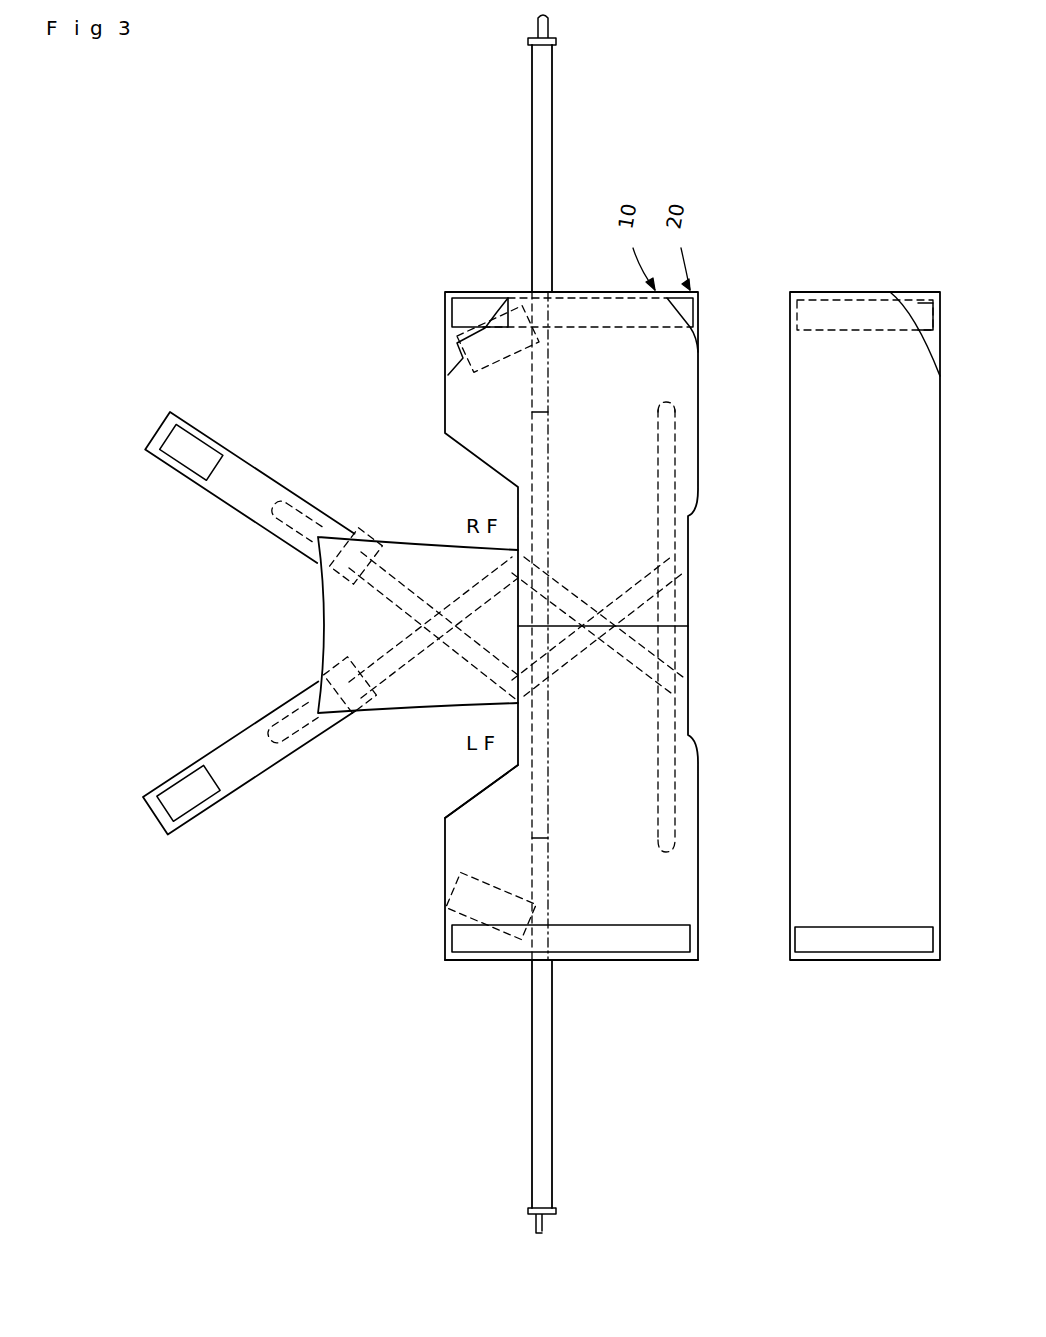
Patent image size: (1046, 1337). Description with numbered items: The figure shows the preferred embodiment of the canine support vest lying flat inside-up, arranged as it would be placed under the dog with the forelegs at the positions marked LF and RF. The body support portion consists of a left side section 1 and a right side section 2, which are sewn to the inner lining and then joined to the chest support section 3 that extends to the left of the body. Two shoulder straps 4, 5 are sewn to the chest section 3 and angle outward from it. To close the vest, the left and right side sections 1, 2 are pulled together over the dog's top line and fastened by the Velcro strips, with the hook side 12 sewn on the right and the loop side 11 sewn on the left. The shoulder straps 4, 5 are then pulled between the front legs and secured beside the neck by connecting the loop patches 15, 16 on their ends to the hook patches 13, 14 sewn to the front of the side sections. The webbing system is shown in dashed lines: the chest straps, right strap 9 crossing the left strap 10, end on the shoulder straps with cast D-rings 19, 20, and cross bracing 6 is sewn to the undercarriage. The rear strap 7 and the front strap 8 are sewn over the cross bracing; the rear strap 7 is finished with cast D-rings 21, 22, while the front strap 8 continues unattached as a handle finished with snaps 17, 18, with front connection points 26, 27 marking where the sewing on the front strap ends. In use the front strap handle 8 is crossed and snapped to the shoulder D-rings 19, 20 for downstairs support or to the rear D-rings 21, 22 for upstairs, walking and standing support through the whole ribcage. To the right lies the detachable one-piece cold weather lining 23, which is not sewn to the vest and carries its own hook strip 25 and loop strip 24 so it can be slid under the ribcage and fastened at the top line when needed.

The left side section 1 is at (571, 862).
The right side section 2 is at (571, 626).
The chest support section 3 is at (418, 625).
The shoulder strap 4 is at (249, 753).
The shoulder strap 5 is at (249, 491).
The cross bracing 6 is at (600, 625).
The rear strap 7 is at (672, 778).
The front strap 8 is at (550, 1063).
The right chest strap 9 is at (350, 698).
The left chest strap 10 is at (361, 556).
The loop side Velcro strip 11 is at (571, 939).
The hook side Velcro strip 12 is at (573, 336).
The hook side Velcro patch 13 is at (491, 905).
The hook side Velcro patch 14 is at (498, 339).
The loop side Velcro patch 15 is at (188, 793).
The loop side Velcro patch 16 is at (191, 452).
The snap 17 is at (550, 1218).
The snap 18 is at (556, 42).
The cast D-ring 19 is at (293, 742).
The cast D-ring 20 is at (292, 513).
The rear D-ring 21 is at (672, 848).
The rear D-ring 22 is at (674, 412).
The cold weather lining 23 is at (865, 626).
The loop side Velcro strip 24 is at (864, 940).
The hook side Velcro strip 25 is at (865, 315).
The front connection point 26 is at (551, 838).
The front connection point 27 is at (549, 413).